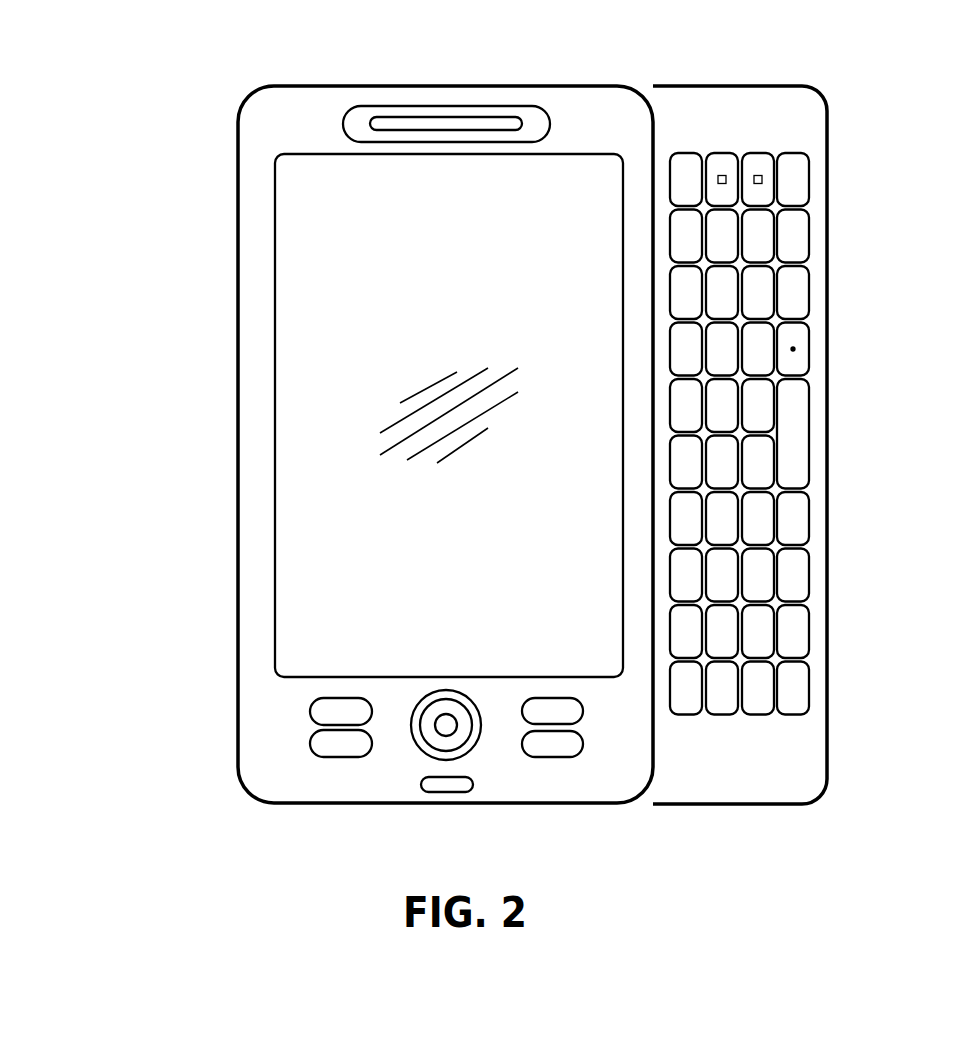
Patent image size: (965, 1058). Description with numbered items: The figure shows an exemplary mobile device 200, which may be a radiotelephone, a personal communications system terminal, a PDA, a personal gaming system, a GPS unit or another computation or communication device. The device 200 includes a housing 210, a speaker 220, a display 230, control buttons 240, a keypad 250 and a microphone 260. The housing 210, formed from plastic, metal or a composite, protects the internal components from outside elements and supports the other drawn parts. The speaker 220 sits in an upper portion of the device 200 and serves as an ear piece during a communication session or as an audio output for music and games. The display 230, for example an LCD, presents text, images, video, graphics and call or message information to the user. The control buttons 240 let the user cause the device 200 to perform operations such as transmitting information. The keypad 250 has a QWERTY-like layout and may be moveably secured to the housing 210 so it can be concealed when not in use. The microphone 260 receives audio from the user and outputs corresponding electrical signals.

The mobile device 200 is at (245, 50).
The housing 210 is at (238, 230).
The speaker 220 is at (343, 122).
The display 230 is at (298, 282).
The control buttons 240 is at (283, 745).
The keypad 250 is at (810, 419).
The microphone 260 is at (448, 790).